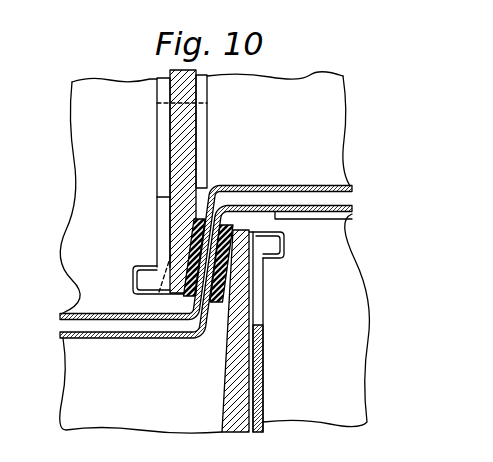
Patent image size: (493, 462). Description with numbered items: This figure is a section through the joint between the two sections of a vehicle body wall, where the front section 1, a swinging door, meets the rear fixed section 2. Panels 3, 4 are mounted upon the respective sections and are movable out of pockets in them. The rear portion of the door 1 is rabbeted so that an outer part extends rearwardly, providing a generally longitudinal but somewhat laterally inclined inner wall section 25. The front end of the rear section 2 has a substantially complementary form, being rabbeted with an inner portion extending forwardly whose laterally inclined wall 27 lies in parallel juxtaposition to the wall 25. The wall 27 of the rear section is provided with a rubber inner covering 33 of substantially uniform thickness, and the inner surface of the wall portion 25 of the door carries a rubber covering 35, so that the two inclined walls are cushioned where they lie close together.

The front section 1 is at (63, 397).
The rear fixed section 2 is at (73, 111).
The panel 3 is at (245, 358).
The panel 4 is at (170, 125).
The inner wall section 25 is at (197, 313).
The laterally inclined wall 27 is at (188, 298).
The inner covering 33 is at (199, 222).
The rubber covering 35 is at (216, 305).